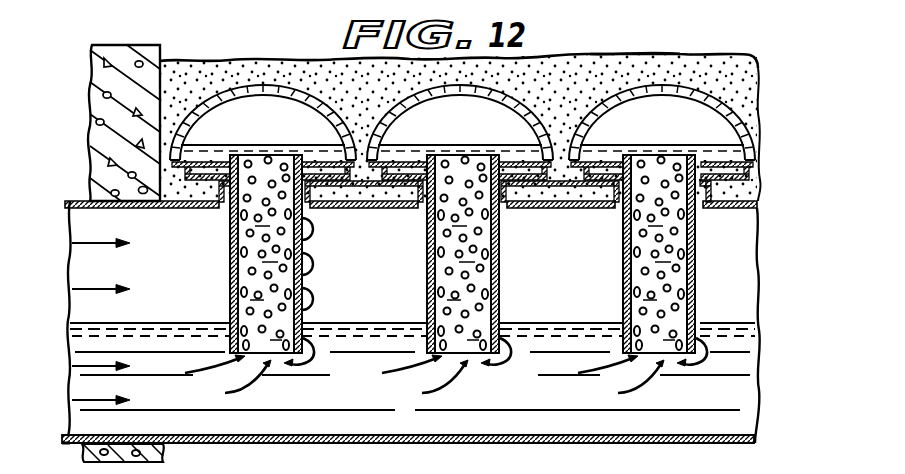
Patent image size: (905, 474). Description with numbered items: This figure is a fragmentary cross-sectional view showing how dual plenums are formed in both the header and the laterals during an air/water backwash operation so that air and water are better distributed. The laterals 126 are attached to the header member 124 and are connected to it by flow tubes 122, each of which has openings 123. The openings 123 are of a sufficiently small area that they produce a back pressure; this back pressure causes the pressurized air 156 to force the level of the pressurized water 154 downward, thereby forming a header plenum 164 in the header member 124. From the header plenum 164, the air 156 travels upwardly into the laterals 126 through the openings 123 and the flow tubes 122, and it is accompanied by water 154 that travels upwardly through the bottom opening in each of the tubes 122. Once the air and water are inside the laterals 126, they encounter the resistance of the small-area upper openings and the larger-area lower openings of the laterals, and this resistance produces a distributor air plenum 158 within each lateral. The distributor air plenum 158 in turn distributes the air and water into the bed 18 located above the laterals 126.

The laterals 126 is at (237, 84).
The bed 18 is at (640, 72).
The distributor air plenum 158 is at (292, 126).
The header member 124 is at (752, 190).
The flow tubes 122 is at (692, 241).
The openings 123 is at (692, 271).
The pressurized air 156 is at (227, 240).
The header plenum 164 is at (227, 277).
The pressurized water 154 is at (227, 311).